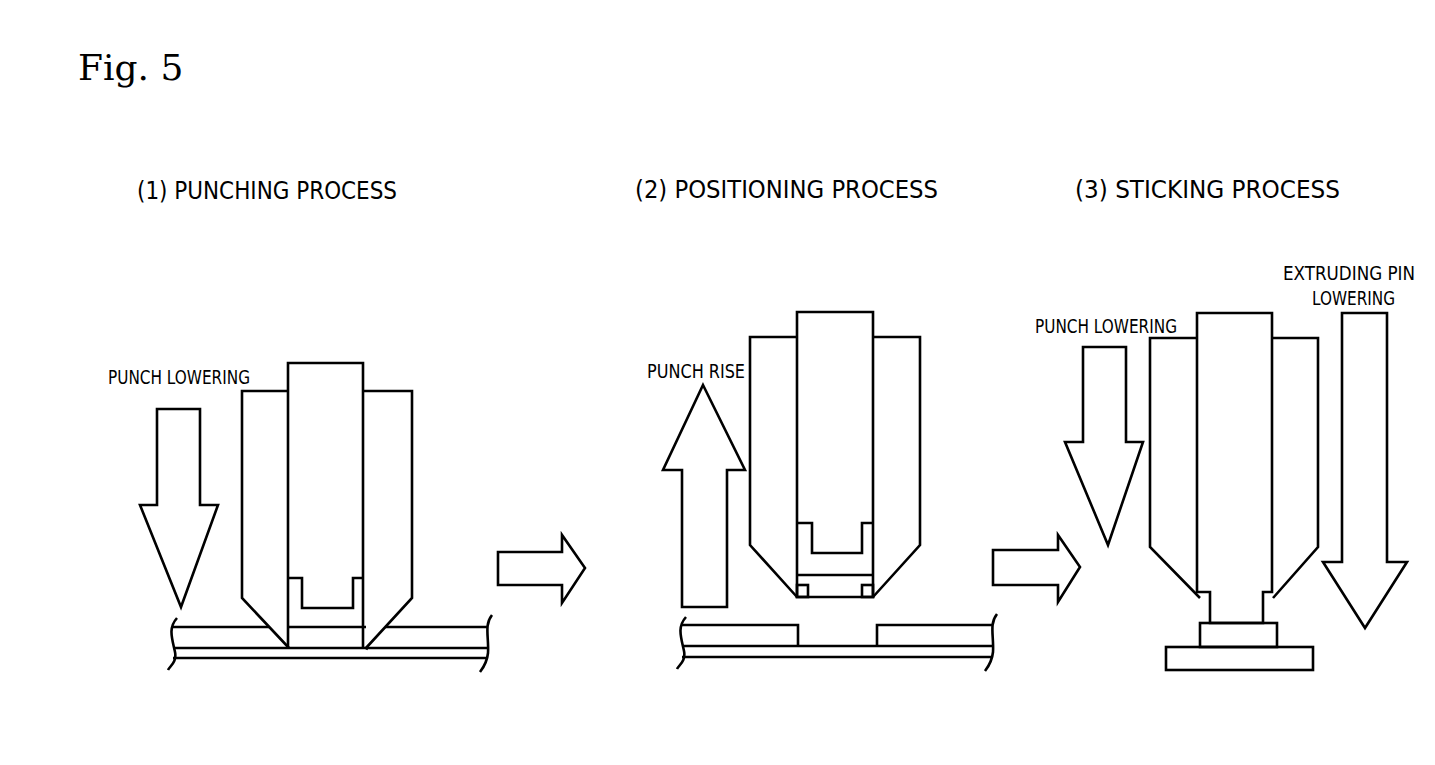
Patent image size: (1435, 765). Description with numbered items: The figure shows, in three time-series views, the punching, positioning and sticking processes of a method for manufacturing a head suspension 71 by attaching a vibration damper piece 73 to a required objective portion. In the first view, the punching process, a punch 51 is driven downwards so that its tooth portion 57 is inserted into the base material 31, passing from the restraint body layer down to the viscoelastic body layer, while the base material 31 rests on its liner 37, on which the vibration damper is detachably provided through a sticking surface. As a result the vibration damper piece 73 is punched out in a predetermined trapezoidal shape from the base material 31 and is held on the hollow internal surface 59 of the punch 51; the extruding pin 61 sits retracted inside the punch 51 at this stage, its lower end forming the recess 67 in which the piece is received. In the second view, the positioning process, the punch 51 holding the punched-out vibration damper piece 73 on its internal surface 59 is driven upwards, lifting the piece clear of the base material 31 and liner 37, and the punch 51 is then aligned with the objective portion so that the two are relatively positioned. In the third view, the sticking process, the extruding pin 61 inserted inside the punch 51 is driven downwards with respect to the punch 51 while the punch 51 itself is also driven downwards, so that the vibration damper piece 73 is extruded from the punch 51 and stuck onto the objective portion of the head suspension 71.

The base material 31 is at (443, 633).
The liner 37 is at (443, 657).
The punch 51 is at (388, 393).
The tooth portion 57 is at (367, 653).
The hollow internal surface 59 is at (816, 592).
The extruding pin 61 is at (315, 370).
The recess 67 is at (320, 598).
The head suspension 71 is at (1297, 660).
The vibration damper piece 73 is at (330, 637).